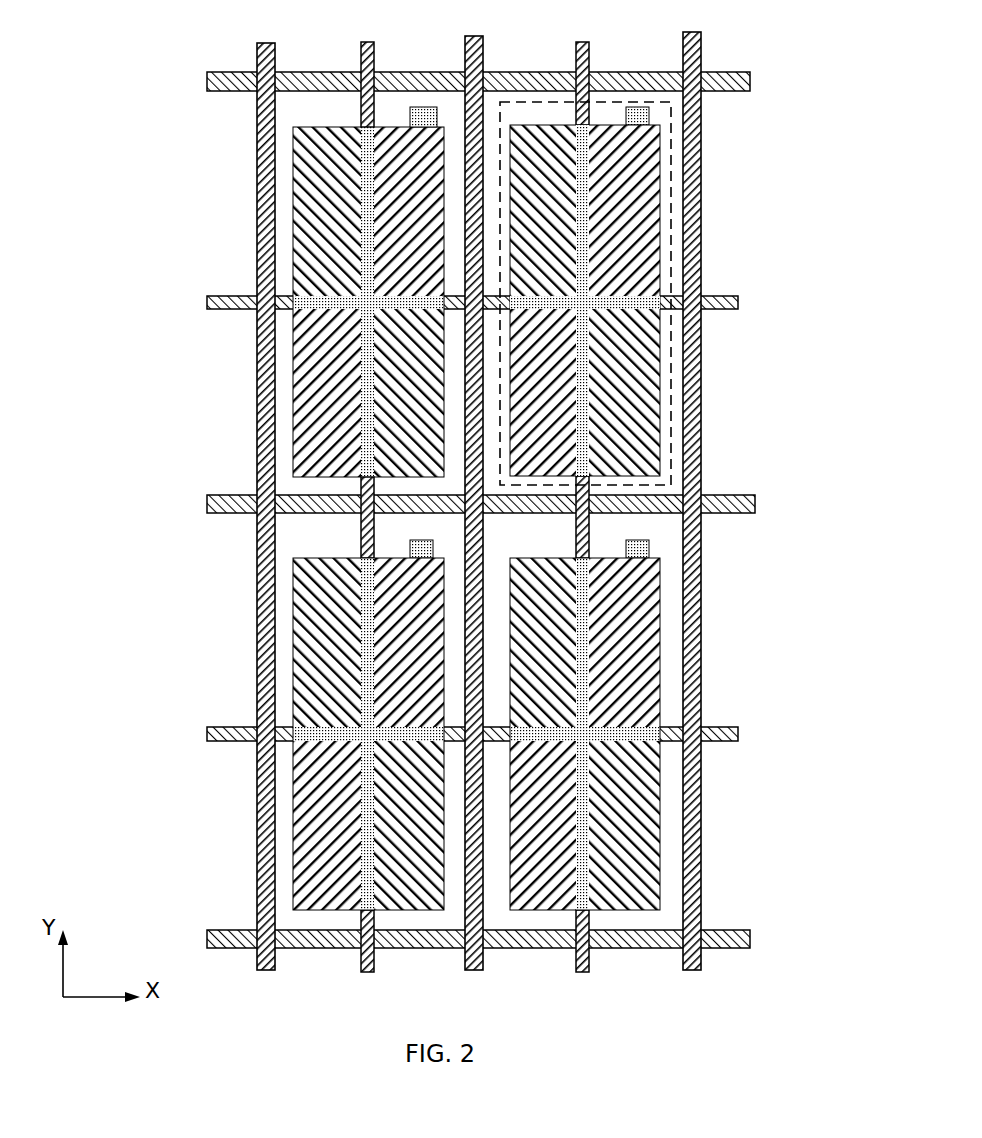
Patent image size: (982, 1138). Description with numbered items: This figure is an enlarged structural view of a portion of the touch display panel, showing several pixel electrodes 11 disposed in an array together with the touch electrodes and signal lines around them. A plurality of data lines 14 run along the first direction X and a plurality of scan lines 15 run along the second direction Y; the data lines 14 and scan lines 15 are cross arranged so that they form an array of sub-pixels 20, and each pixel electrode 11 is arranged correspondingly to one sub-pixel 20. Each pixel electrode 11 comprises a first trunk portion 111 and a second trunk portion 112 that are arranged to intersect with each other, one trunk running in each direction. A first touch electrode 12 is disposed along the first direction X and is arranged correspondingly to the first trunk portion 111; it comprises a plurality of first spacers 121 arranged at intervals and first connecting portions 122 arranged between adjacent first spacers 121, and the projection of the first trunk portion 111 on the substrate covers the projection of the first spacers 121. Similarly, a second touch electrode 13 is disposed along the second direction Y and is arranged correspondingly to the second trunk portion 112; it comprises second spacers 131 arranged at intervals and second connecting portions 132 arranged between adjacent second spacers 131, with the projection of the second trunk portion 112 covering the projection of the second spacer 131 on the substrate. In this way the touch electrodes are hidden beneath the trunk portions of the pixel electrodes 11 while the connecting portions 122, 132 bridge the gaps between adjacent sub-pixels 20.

The pixel electrode 11 is at (857, 198).
The first trunk portion 111 is at (627, 300).
The second trunk portion 112 is at (585, 207).
The first touch electrode 12 is at (72, 193).
The first spacer 121 is at (300, 292).
The first connecting portion 122 is at (458, 297).
The second touch electrode 13 is at (74, 432).
The second spacer 131 is at (362, 430).
The second connecting portion 132 is at (362, 522).
The data line 14 is at (258, 118).
The scan line 15 is at (222, 78).
The sub-pixel 20 is at (303, 113).